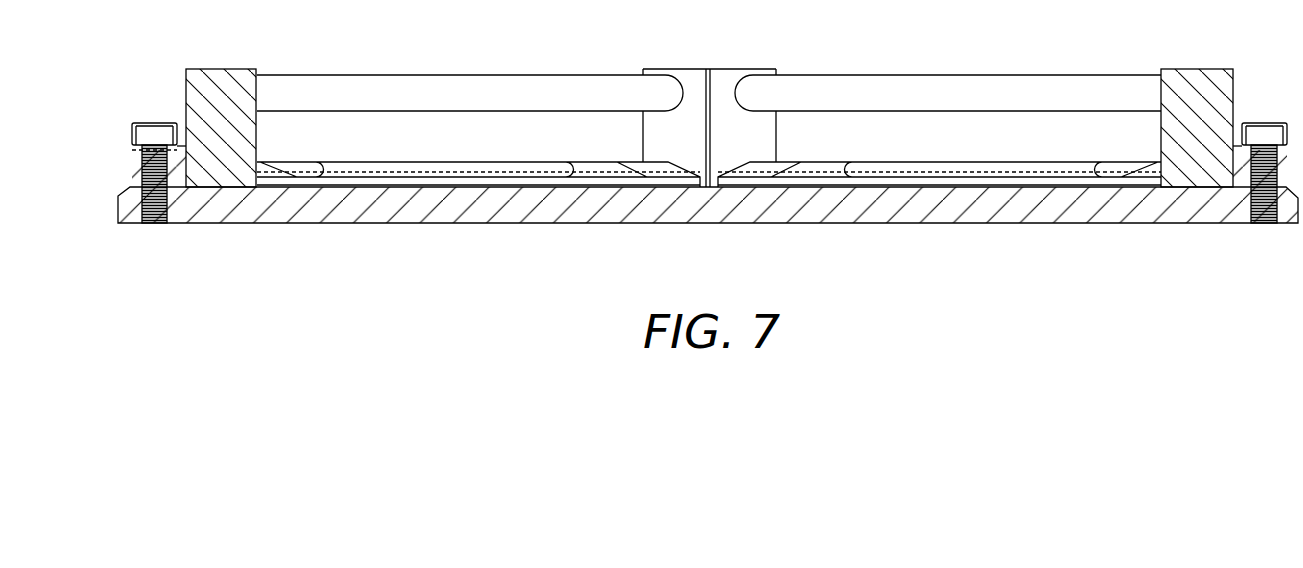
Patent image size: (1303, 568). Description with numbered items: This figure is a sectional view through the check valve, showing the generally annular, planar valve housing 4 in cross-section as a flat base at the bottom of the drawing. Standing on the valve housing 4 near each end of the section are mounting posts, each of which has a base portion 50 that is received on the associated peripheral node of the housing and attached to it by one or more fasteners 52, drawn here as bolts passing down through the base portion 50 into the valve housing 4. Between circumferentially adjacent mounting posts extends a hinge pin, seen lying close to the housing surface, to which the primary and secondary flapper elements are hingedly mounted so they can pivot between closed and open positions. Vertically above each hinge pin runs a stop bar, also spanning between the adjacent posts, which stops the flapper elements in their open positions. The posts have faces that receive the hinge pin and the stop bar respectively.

The valve housing 4 is at (710, 212).
The base portion 50 is at (198, 170).
The fastener 52 is at (156, 223).